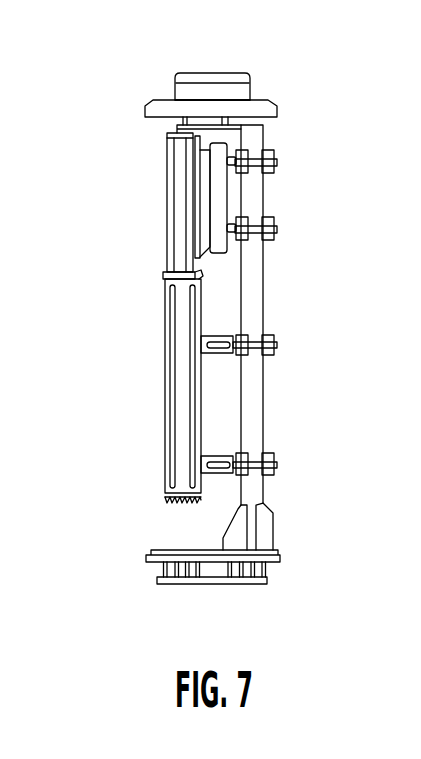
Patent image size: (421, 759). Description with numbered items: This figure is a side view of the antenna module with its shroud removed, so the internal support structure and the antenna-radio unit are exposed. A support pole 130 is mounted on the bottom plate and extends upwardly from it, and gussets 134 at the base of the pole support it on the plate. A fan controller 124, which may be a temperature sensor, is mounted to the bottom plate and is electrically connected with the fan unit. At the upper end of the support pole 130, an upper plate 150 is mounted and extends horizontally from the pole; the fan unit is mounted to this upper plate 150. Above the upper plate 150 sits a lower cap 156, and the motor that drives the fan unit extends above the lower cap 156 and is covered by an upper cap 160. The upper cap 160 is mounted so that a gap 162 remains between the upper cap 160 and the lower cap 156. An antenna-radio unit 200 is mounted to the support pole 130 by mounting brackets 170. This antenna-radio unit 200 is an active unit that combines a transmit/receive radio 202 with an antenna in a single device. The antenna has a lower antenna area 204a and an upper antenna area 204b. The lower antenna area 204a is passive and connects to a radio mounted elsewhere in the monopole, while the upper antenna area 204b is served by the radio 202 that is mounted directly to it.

The fan controller 124 is at (172, 550).
The support pole 130 is at (256, 298).
The gussets 134 is at (270, 533).
The upper plate 150 is at (243, 121).
The lower cap 156 is at (262, 108).
The upper cap 160 is at (237, 88).
The gap 162 is at (167, 92).
The mounting brackets 170 is at (222, 350).
The antenna-radio unit 200 is at (120, 318).
The transmit/receive radio 202 is at (215, 193).
The lower antenna area 204a is at (177, 364).
The upper antenna area 204b is at (182, 212).